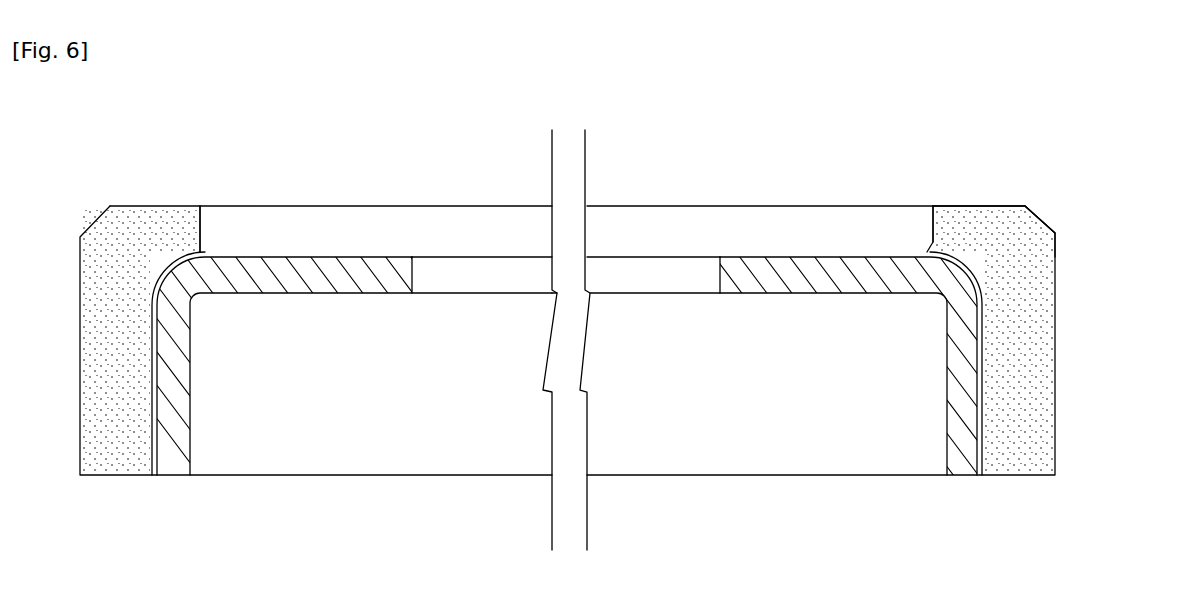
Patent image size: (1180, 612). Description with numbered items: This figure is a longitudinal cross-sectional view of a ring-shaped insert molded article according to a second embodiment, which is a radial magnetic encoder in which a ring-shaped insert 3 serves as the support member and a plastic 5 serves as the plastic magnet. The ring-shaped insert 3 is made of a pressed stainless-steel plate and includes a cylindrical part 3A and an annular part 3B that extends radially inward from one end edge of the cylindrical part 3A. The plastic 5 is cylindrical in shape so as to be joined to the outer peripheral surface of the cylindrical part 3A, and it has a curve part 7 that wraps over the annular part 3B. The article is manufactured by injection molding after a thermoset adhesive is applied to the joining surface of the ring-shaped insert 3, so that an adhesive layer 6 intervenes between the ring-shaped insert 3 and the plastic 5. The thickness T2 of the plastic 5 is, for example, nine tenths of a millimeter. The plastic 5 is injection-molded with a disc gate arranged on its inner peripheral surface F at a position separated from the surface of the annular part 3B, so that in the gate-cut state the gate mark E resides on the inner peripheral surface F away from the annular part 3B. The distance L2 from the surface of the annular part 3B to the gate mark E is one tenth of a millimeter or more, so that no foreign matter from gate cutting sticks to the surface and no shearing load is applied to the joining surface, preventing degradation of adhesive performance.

The plastic 5 is at (1055, 270).
The adhesive layer 6 is at (983, 362).
The curve part 7 is at (965, 205).
The ring-shaped insert 3 is at (573, 350).
The cylindrical part 3A is at (946, 405).
The annular part 3B is at (860, 290).
The inner peripheral surface F is at (205, 240).
The gate mark E is at (926, 212).
The distance L2 is at (930, 232).
The thickness T2 is at (982, 477).